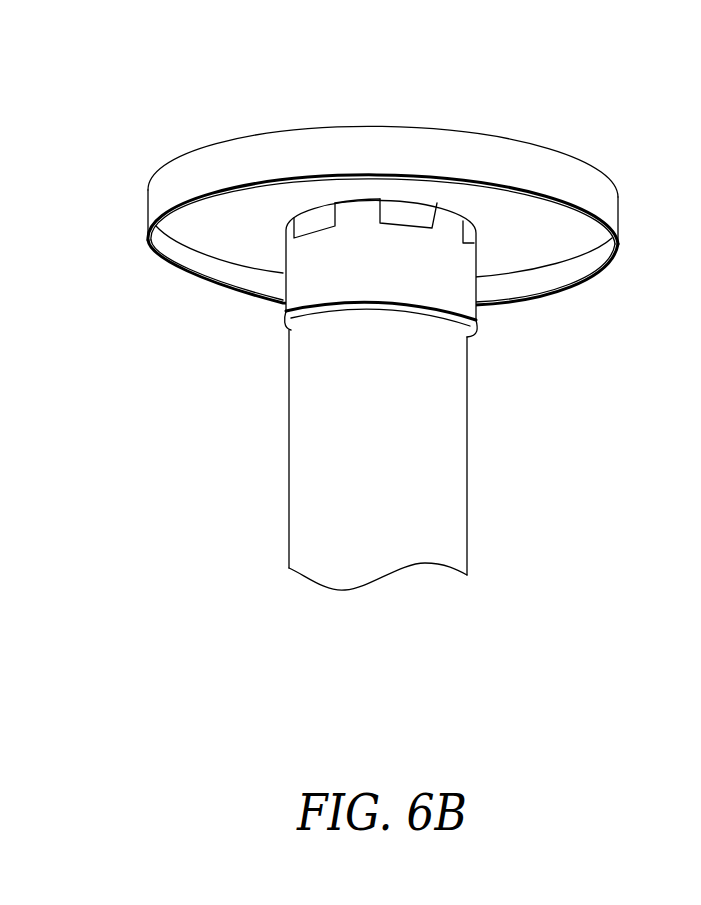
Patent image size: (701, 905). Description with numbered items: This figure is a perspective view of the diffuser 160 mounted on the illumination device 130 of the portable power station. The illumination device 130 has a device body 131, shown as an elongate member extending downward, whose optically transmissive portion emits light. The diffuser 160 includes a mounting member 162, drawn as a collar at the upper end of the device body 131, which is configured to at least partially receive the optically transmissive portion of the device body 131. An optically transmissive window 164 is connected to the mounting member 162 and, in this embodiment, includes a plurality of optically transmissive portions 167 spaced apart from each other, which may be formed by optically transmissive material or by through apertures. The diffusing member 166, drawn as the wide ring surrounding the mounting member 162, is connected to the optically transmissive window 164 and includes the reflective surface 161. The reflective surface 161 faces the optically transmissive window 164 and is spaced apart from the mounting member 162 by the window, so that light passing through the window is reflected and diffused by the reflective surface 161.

The diffuser 160 is at (420, 203).
The diffusing member 166 is at (173, 185).
The reflective surface 161 is at (520, 223).
The mounting member 162 is at (303, 278).
The optically transmissive portions 167 is at (309, 216).
The optically transmissive window 164 is at (361, 199).
The illumination device 130 is at (371, 460).
The device body 131 is at (352, 472).